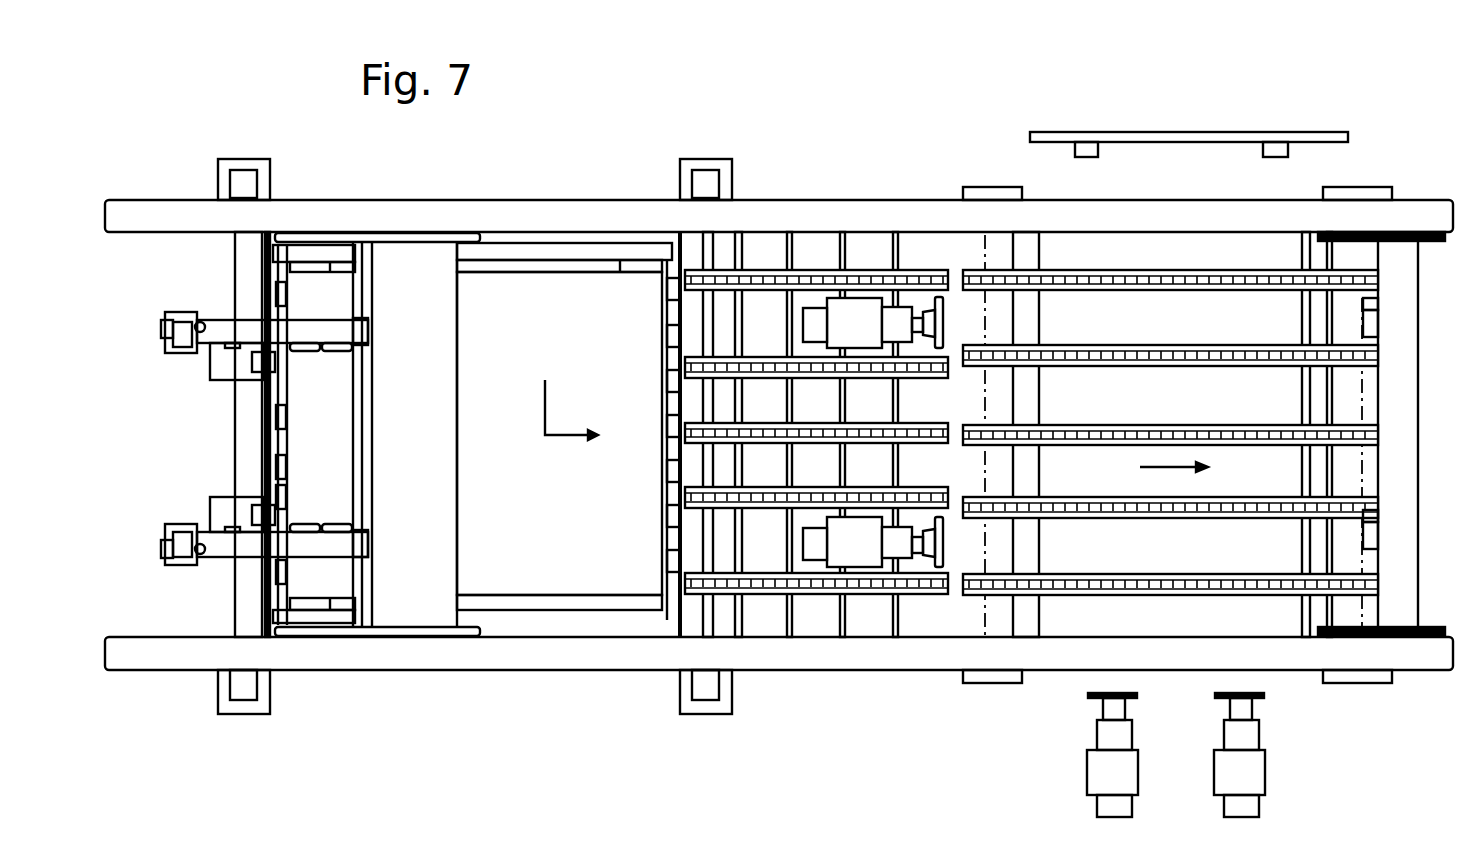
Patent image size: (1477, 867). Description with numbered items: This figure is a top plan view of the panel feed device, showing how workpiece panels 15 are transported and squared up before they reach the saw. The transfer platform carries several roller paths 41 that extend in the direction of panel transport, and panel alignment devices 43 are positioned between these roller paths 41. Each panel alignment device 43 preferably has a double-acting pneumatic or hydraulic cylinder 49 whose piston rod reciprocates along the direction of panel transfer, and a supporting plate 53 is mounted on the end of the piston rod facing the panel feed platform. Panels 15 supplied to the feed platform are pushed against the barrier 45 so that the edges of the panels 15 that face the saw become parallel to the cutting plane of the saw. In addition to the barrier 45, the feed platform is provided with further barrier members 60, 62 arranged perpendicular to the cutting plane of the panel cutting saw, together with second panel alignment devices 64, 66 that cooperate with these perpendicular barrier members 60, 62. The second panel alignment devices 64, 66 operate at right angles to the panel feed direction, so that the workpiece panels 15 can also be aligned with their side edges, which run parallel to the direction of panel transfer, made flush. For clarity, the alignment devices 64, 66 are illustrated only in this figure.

The workpiece panel 15 is at (548, 333).
The roller path 41 is at (773, 270).
The panel alignment device 43 is at (927, 302).
The barrier 45 is at (1372, 325).
The double-acting pneumatic or hydraulic cylinder 49 is at (900, 330).
The supporting plate 53 is at (943, 322).
The barrier member 60 is at (1087, 148).
The barrier member 62 is at (1275, 148).
The second panel alignment device 64 is at (1125, 776).
The second panel alignment device 66 is at (1253, 776).